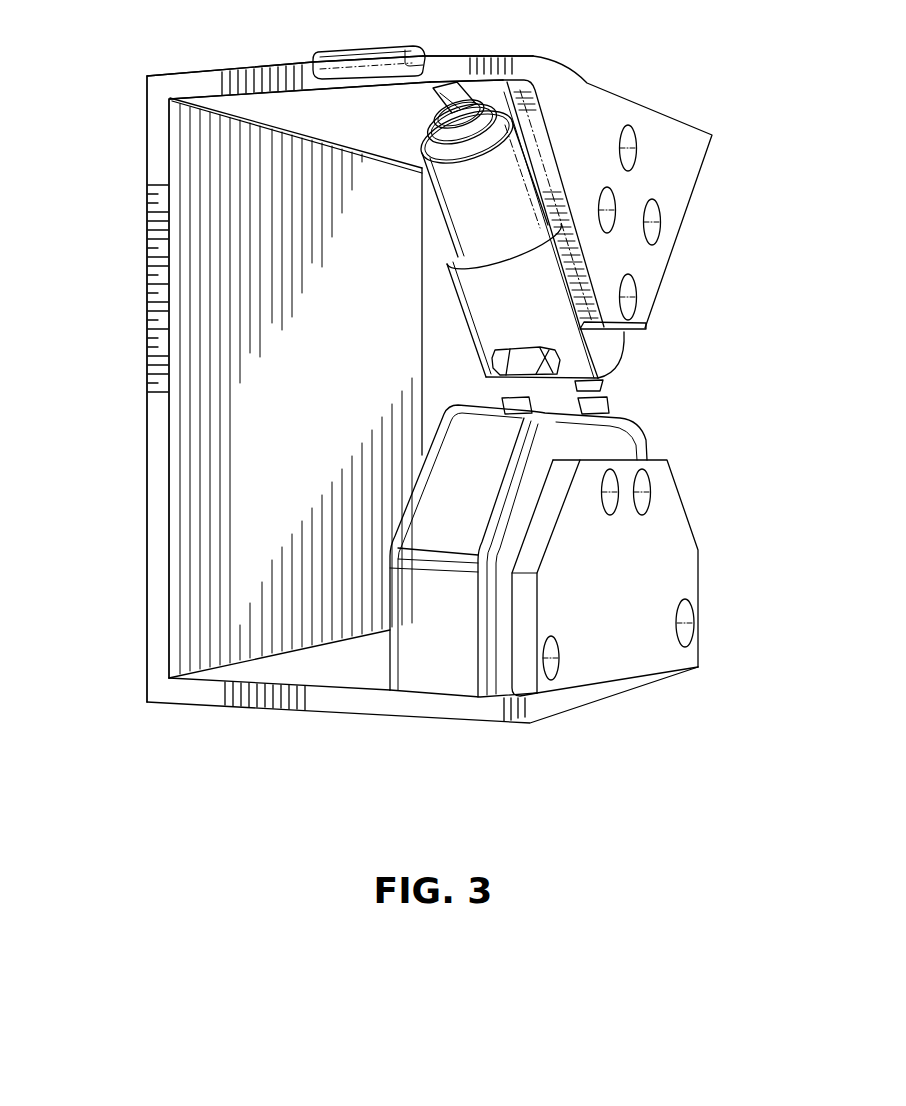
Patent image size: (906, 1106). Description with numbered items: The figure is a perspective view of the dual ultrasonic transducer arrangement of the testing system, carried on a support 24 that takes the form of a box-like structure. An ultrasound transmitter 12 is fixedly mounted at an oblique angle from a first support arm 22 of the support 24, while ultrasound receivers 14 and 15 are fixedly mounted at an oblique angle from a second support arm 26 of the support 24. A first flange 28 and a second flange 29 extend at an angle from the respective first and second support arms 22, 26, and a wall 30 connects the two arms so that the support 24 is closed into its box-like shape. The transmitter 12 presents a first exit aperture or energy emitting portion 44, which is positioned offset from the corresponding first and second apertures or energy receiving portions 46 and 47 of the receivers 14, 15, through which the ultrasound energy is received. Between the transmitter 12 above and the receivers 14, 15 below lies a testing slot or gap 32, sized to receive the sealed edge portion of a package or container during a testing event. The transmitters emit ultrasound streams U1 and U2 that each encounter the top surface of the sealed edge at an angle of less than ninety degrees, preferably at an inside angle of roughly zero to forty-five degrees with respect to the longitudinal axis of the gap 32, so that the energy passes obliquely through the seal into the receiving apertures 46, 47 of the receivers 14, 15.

The ultrasound transmitter 12 is at (460, 213).
The ultrasound receiver 14 is at (427, 497).
The ultrasound receiver 15 is at (630, 445).
The first support arm 22 is at (200, 82).
The support 24 is at (122, 182).
The second support arm 26 is at (338, 705).
The first flange 28 is at (680, 186).
The second flange 29 is at (680, 584).
The wall 30 is at (150, 361).
The testing slot or gap 32 is at (486, 385).
The first exit aperture 44 is at (505, 352).
The first aperture 46 is at (515, 410).
The second aperture 47 is at (625, 414).
The ultrasound stream U1 is at (513, 355).
The ultrasound stream U2 is at (602, 380).